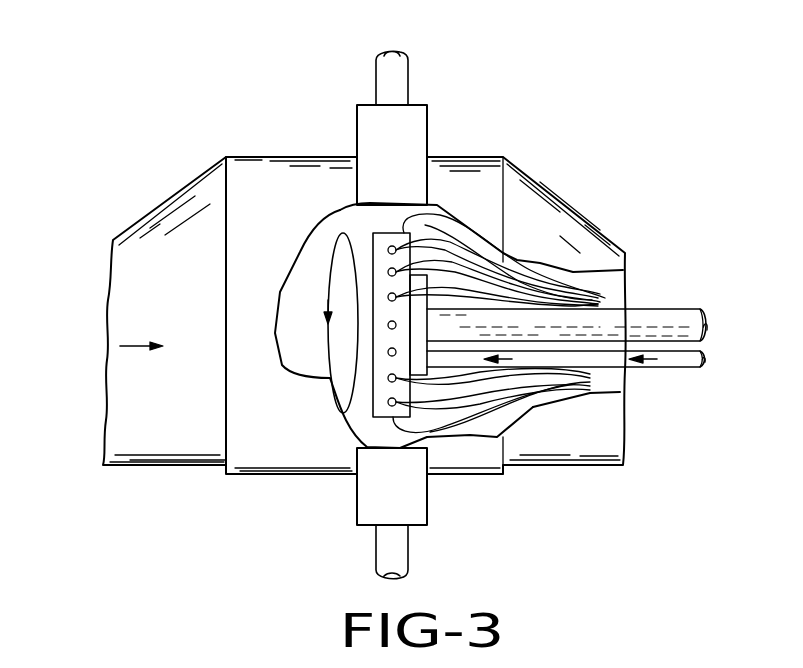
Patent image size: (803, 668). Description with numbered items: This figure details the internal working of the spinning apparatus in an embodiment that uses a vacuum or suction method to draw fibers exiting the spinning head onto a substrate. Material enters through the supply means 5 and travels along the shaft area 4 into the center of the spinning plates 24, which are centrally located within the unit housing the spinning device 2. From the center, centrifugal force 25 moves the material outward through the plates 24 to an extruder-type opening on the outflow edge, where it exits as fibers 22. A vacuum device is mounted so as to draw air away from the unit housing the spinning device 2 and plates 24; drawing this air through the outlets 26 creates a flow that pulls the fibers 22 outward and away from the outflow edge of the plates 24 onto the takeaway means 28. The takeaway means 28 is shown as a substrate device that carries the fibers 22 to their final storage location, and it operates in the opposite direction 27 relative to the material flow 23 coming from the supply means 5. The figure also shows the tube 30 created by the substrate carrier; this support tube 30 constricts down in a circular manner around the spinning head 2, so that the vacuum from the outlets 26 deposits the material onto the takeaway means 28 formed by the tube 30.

The spinning device 2 is at (365, 245).
The shaft area 4 is at (650, 320).
The supply means 5 is at (688, 368).
The fibers 22 is at (505, 278).
The material flow 23 is at (664, 358).
The plates 24 is at (378, 389).
The centrifugal force 25 is at (330, 380).
The outlets 26 is at (394, 86).
The opposite direction 27 is at (132, 352).
The takeaway means 28 is at (568, 435).
The tube 30 is at (273, 191).